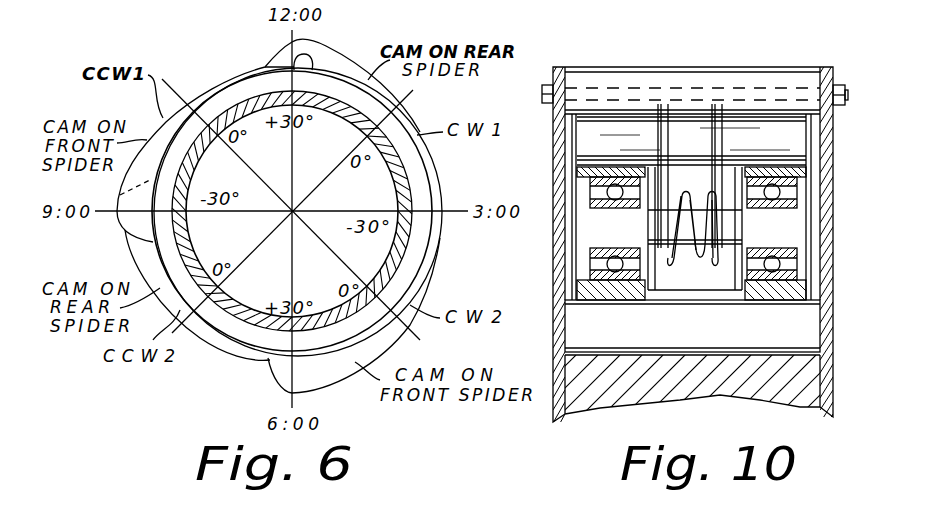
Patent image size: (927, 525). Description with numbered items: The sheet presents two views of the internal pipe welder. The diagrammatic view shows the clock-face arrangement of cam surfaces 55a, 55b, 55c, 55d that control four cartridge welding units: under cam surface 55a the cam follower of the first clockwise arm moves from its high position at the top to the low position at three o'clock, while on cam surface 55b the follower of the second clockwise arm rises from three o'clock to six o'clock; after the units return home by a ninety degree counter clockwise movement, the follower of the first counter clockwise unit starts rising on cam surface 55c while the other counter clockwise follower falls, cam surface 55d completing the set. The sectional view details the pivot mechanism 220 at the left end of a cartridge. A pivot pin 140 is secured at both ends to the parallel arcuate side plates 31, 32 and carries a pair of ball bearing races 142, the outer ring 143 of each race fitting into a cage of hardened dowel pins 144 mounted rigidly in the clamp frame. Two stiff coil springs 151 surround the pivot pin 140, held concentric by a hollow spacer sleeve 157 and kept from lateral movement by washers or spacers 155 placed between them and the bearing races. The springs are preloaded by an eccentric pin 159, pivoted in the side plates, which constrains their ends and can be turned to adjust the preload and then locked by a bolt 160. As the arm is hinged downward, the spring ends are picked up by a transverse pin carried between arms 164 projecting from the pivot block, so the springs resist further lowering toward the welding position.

In FIG. 6, the cam surface 55a is at (406, 114).
In FIG. 6, the cam surface 55b is at (433, 263).
In FIG. 6, the cam surface 55c is at (125, 178).
In FIG. 6, the cam lobe on rear spider (lower left) 55d is at (220, 340).
In FIG. 10, the side plate 31 is at (570, 113).
In FIG. 10, the side plate 32 is at (813, 120).
In FIG. 10, the pivot pin 140 is at (578, 210).
In FIG. 10, the ball bearing races 142 is at (645, 214).
In FIG. 10, the outer ring 143 is at (803, 274).
In FIG. 10, the dowel pins 144 is at (795, 339).
In FIG. 10, the coil springs 151 is at (660, 106).
In FIG. 10, the washers or spacers 155 is at (736, 272).
In FIG. 10, the hollow spacer sleeve 157 is at (722, 220).
In FIG. 10, the eccentric pin 159 is at (807, 76).
In FIG. 10, the bolt 160 is at (545, 88).
In FIG. 10, the arms 164 is at (556, 164).
In FIG. 10, the pivot mechanism 220 is at (847, 154).